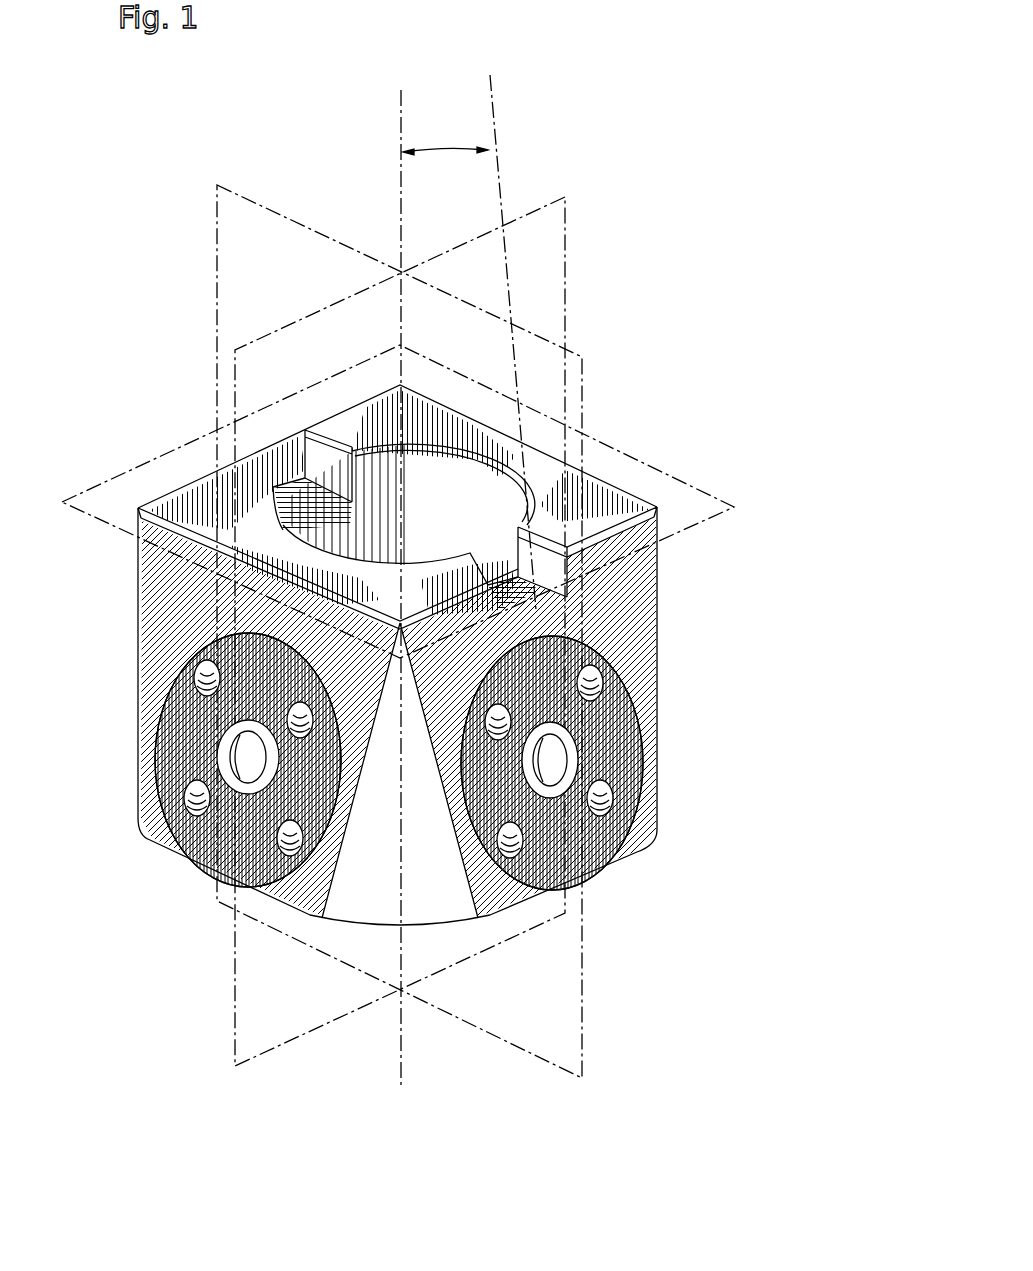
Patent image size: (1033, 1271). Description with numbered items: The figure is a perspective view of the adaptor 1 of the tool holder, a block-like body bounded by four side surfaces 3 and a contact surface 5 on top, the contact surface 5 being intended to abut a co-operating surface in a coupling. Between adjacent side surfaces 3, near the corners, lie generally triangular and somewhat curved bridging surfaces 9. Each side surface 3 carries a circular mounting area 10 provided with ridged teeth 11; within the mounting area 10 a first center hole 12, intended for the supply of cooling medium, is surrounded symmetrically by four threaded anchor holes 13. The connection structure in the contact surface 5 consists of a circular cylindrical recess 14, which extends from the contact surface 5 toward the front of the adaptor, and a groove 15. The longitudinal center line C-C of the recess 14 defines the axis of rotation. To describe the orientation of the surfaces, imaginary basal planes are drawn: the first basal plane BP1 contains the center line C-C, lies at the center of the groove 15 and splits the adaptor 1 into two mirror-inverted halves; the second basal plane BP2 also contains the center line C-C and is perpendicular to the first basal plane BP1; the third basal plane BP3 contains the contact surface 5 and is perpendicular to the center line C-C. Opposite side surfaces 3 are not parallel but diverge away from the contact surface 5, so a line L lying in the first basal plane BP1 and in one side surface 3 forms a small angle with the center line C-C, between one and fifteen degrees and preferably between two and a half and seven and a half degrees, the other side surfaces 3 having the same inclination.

The adaptor 1 is at (548, 443).
The side surfaces 3 is at (133, 537).
The contact surface 5 is at (623, 493).
The bridging surfaces 9 is at (422, 897).
The mounting area 10 is at (637, 683).
The ridged teeth 11 is at (619, 726).
The first center hole 12 is at (242, 755).
The threaded anchor holes 13 is at (612, 801).
The circular cylindrical recess 14 is at (468, 492).
The groove 15 is at (290, 495).
The first basal plane BP1 is at (282, 237).
The second basal plane BP2 is at (553, 222).
The third basal plane BP3 is at (102, 500).
The line L is at (506, 264).
The longitudinal center line C-C is at (402, 312).